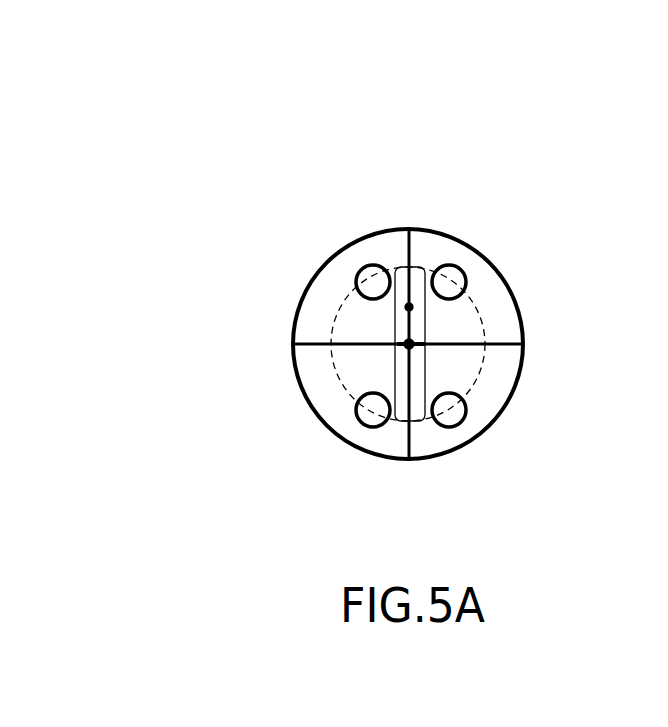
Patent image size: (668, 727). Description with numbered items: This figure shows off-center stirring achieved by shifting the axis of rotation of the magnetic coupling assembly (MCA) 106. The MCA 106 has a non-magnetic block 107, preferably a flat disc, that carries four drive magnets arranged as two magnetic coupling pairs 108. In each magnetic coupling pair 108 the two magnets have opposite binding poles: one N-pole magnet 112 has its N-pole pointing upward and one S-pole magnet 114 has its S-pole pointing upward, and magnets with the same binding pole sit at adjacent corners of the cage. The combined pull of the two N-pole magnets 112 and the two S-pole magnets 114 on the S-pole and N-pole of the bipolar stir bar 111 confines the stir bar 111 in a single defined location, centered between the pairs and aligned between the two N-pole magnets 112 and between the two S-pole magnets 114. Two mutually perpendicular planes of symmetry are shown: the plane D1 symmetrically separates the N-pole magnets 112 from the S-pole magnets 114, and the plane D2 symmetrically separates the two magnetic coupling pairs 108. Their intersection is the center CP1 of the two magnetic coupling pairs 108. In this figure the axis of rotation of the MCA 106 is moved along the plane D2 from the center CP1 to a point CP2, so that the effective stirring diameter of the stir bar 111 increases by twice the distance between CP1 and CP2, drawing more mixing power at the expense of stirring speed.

The magnetic coupling assembly 106 is at (521, 313).
The non-magnetic block 107 is at (323, 392).
The magnetic coupling pair 108 is at (382, 264).
The stir bar 111 is at (404, 276).
The N-pole magnet 112 is at (358, 269).
The S-pole magnet 114 is at (361, 421).
The center of the two magnetic coupling pairs CP1 is at (412, 342).
The shifted axis-of-rotation point CP2 is at (406, 308).
The first plane of symmetry D1 is at (492, 347).
The second plane of symmetry D2 is at (411, 246).